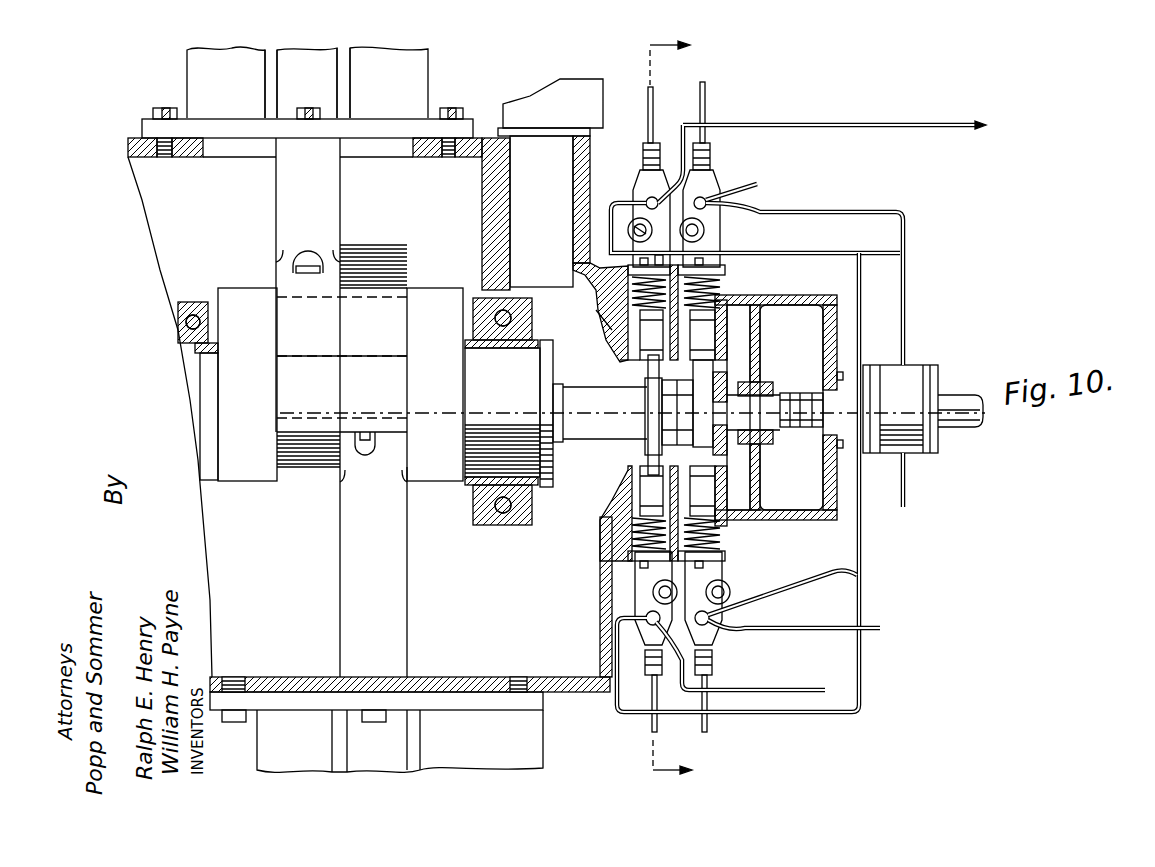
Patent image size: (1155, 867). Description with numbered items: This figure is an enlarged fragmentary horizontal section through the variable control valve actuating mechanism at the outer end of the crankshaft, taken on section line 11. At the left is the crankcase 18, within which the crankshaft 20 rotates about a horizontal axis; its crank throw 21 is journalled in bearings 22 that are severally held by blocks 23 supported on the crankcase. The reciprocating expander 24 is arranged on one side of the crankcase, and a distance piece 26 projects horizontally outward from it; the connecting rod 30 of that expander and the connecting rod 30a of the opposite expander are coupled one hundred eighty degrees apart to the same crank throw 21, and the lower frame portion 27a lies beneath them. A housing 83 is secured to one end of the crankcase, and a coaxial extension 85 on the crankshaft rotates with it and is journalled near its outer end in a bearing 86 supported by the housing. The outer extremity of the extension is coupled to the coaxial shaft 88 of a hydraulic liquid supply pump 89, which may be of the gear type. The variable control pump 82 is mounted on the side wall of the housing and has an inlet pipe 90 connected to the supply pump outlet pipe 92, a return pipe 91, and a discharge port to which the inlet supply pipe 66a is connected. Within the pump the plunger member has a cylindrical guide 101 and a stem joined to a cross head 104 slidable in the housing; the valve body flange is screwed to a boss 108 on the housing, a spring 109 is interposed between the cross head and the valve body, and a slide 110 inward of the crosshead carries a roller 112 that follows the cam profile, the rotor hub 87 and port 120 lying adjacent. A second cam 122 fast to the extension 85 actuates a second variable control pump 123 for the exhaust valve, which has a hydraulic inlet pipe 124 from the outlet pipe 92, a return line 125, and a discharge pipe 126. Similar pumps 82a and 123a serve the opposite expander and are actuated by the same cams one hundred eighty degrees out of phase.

The section line 11 is at (666, 408).
The crankcase 18 is at (128, 156).
The crankshaft 20 is at (198, 400).
The crank throw 21 is at (230, 292).
The bearing 22 is at (200, 352).
The block 23 is at (182, 308).
The reciprocating expander 24 is at (432, 57).
The distance piece 26 is at (187, 66).
The lower frame block 27a is at (512, 750).
The connecting rod 30 is at (340, 193).
The connecting rod 30a is at (340, 584).
The inlet supply pipe 66a is at (648, 96).
The variable control pump 82 is at (636, 178).
The variable control pump 82a is at (636, 580).
The housing 83 is at (800, 295).
The shaft extension 85 is at (590, 392).
The bearing 86 is at (760, 385).
The rotor 87 is at (645, 392).
The shaft 88 is at (830, 393).
The hydraulic liquid supply pump 89 is at (922, 365).
The inlet pipe 90 is at (618, 210).
The return pipe 91 is at (884, 123).
The outlet pipe 92 is at (905, 293).
The cylindrical guide 101 is at (660, 255).
The cross head 104 is at (622, 335).
The boss 108 is at (640, 265).
The spring 109 is at (599, 318).
The slide 110 is at (640, 355).
The roller 112 is at (648, 378).
The port 120 is at (627, 238).
The second cam 122 is at (713, 372).
The second variable control pump 123 is at (722, 235).
The variable control pump 123a is at (724, 568).
The hydraulic inlet pipe 124 is at (840, 211).
The return line 125 is at (757, 184).
The pipe 126 is at (706, 96).